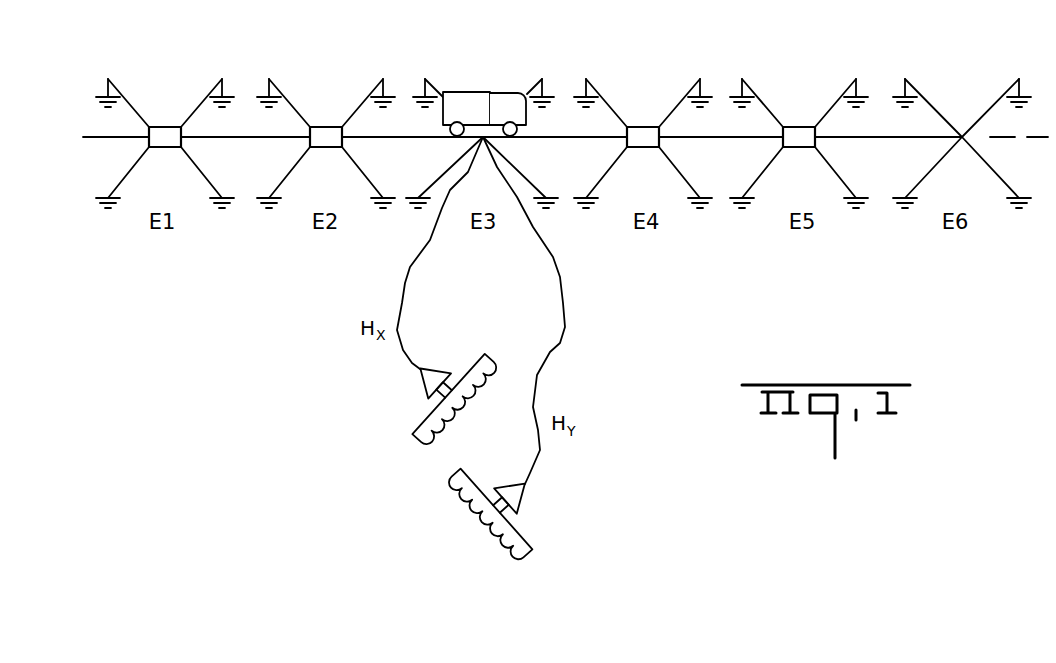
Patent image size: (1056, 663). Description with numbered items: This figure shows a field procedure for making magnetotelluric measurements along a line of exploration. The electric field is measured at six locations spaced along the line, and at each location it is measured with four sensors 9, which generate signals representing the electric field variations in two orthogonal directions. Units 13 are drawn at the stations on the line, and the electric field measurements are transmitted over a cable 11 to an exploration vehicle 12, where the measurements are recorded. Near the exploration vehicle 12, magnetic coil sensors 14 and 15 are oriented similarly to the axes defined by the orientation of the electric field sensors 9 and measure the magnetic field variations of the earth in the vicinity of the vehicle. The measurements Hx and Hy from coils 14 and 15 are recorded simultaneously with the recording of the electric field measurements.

The sensors 9 is at (99, 91).
The cable 11 is at (233, 137).
The exploration vehicle 12 is at (507, 92).
The station unit 13 is at (167, 147).
The magnetic coil sensor 14 is at (418, 427).
The magnetic coil sensor 15 is at (522, 530).